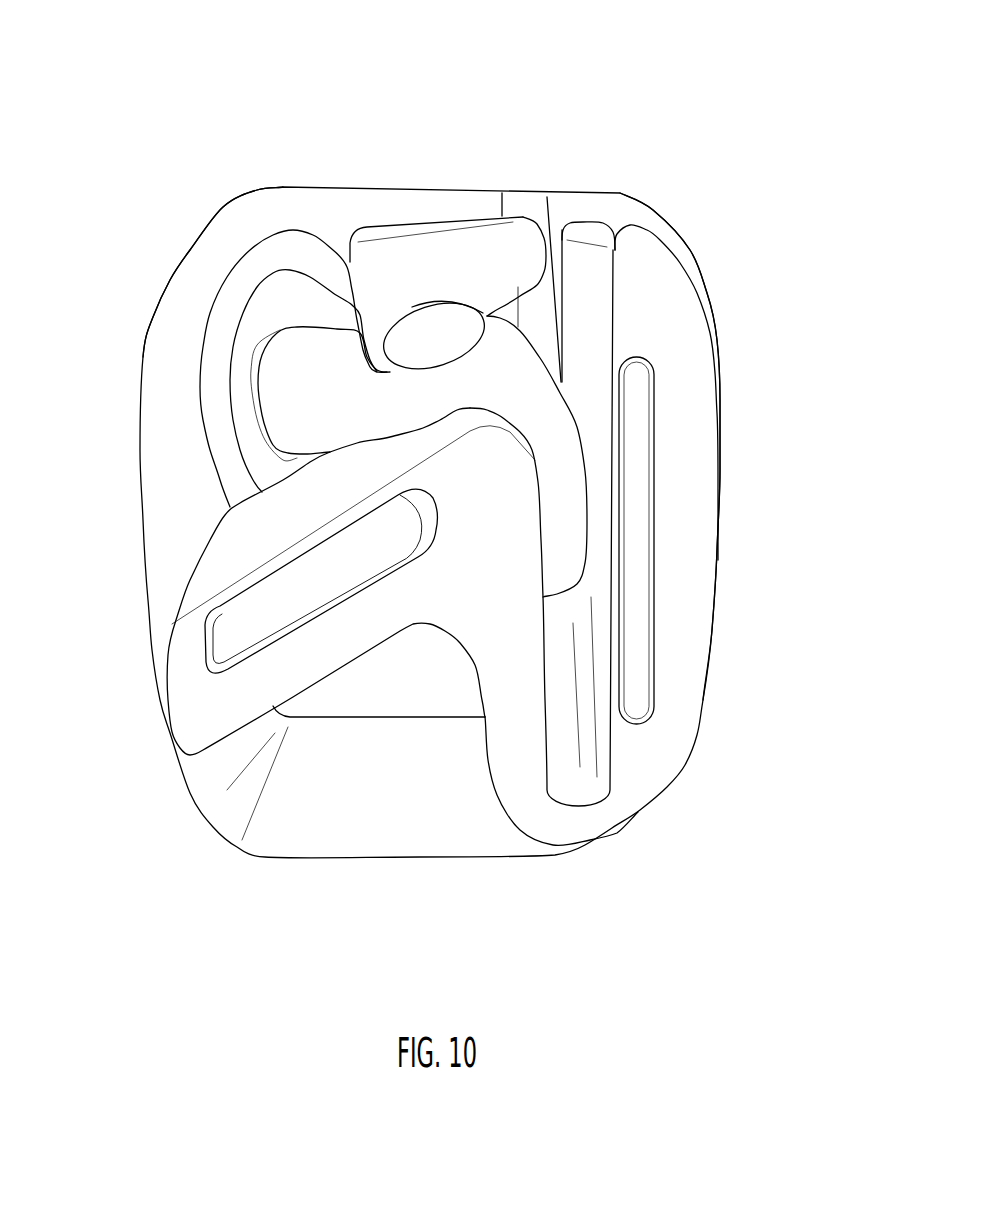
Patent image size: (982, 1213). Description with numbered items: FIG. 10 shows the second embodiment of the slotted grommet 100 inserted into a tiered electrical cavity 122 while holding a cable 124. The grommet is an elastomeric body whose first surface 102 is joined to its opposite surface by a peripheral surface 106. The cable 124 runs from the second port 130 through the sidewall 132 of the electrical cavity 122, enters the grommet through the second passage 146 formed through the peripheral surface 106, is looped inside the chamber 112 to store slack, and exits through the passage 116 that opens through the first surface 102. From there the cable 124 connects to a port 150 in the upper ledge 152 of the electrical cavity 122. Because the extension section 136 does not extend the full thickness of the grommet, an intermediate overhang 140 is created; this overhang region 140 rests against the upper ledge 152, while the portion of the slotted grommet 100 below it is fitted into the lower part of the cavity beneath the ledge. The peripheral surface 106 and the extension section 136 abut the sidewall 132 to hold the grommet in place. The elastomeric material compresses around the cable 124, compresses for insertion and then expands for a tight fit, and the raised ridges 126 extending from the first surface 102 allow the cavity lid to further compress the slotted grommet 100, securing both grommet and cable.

The slotted grommet 100 is at (668, 832).
The first surface 102 is at (689, 663).
The peripheral surface 106 is at (720, 450).
The chamber 112 is at (607, 505).
The passage 116 is at (385, 403).
The electrical cavity 122 is at (190, 278).
The cable 124 is at (573, 440).
The raised ridges 126 is at (463, 283).
The second port 130 is at (518, 183).
The sidewall 132 is at (188, 520).
The extension section 136 is at (195, 678).
The intermediate overhang 140 is at (455, 208).
The second passage 146 is at (555, 242).
The port 150 is at (303, 243).
The upper ledge 152 is at (375, 687).